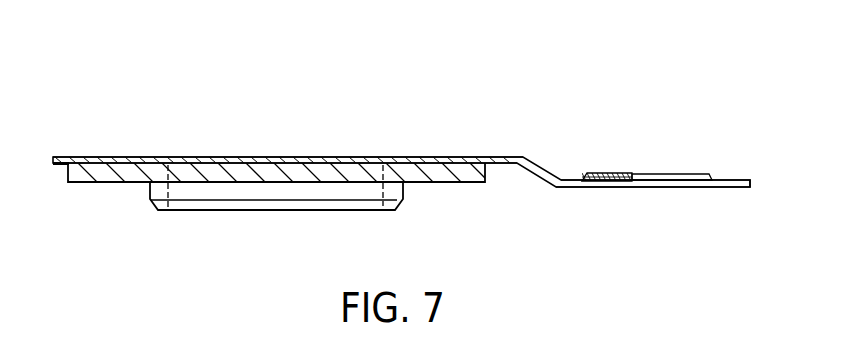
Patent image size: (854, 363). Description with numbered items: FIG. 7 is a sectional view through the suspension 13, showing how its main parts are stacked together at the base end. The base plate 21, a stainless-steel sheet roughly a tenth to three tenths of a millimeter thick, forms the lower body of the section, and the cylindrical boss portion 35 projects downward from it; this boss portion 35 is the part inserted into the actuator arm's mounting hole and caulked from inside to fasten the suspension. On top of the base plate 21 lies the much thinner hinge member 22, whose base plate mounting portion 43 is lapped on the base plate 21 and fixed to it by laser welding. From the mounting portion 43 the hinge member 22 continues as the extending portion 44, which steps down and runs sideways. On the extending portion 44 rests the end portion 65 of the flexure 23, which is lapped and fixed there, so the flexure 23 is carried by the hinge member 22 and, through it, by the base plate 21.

The suspension 13 is at (488, 65).
The hinge member 22 is at (403, 150).
The base plate mounting portion 43 is at (275, 156).
The base plate 21 is at (447, 183).
The boss portion 35 is at (313, 211).
The extending portion 44 is at (616, 188).
The flexure 23 is at (623, 164).
The end portion 65 is at (722, 173).